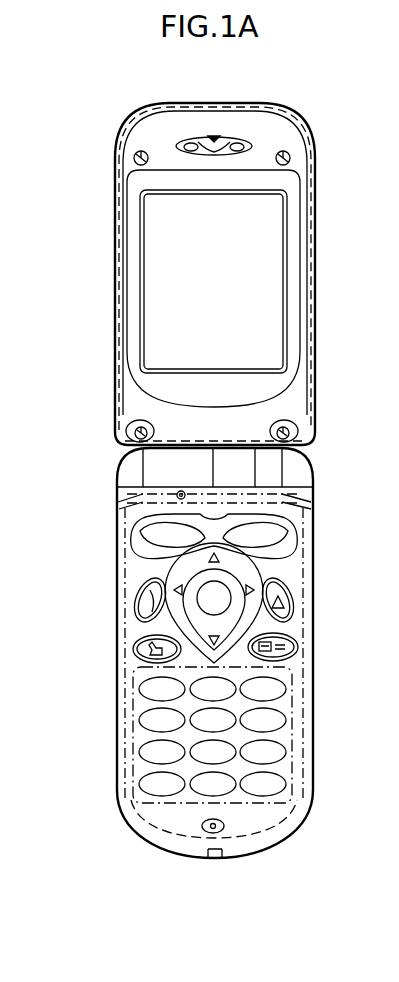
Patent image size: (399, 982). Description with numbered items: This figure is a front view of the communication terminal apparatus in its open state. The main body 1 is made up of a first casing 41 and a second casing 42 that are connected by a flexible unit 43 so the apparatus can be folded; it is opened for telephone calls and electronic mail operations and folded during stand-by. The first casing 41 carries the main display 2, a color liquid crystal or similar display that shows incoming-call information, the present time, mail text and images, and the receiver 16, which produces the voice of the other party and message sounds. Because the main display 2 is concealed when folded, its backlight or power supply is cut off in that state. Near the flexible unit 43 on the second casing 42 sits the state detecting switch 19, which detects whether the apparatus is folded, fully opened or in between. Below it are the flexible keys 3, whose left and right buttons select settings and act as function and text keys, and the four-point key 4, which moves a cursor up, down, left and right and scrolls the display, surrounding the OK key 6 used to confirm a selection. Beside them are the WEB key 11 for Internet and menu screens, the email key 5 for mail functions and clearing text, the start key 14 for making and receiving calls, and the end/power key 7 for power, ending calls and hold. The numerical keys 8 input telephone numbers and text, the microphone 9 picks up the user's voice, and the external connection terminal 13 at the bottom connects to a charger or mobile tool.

The main body 1 is at (188, 481).
The main display 2 is at (268, 187).
The flexible keys 3 is at (178, 530).
The four-point key 4 is at (238, 554).
The email key 5 is at (274, 602).
The OK key 6 is at (228, 591).
The end/power key 7 is at (291, 648).
The numerical keys 8 is at (291, 731).
The microphone 9 is at (226, 837).
The WEB key 11 is at (138, 593).
The external connection terminal 13 is at (204, 862).
The start key 14 is at (146, 638).
The receiver 16 is at (238, 138).
The state detecting switch 19 is at (176, 492).
The first casing 41 is at (113, 306).
The second casing 42 is at (113, 690).
The flexible unit 43 is at (290, 462).